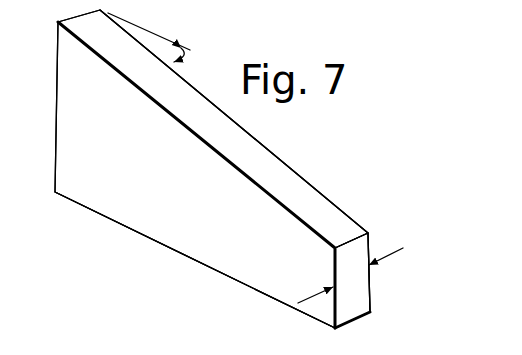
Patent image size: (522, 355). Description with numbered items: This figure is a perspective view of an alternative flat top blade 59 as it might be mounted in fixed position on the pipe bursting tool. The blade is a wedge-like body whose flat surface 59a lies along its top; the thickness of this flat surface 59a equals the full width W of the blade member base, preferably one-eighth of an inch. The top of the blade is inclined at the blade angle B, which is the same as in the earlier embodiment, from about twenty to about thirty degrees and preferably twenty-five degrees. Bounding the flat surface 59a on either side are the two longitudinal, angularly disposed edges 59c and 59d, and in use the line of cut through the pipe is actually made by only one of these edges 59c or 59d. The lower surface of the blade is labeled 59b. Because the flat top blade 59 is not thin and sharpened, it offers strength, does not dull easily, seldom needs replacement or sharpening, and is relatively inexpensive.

The flat top blade 59 is at (125, 239).
The flat surface 59a is at (243, 138).
The bottom surface 59b is at (219, 264).
The longitudinal angularly disposed edge 59c is at (240, 172).
The longitudinal angularly disposed edge 59d is at (389, 181).
The blade angle B is at (188, 58).
The width W is at (347, 275).